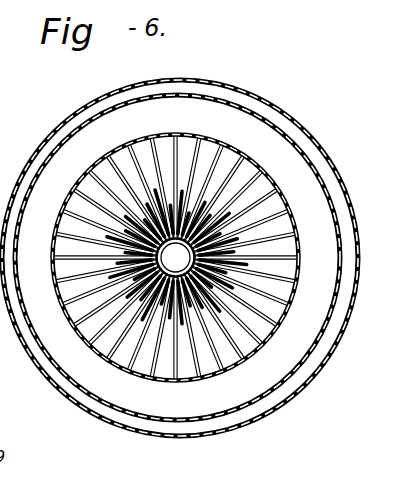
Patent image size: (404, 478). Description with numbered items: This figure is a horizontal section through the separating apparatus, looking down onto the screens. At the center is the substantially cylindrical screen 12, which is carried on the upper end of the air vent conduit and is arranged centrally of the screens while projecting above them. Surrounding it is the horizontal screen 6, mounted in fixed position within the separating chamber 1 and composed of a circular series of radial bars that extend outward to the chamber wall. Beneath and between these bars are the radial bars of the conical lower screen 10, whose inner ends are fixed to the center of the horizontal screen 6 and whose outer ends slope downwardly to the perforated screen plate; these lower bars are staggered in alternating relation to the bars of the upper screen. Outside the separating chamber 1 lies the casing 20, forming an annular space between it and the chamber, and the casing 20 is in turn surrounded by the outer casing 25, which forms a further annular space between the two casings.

The separating chamber 1 is at (257, 352).
The horizontal screen 6 is at (137, 372).
The conical lower screen 10 is at (181, 379).
The cylindrical screen 12 is at (176, 258).
The casing 20 is at (70, 385).
The outer casing 25 is at (72, 411).